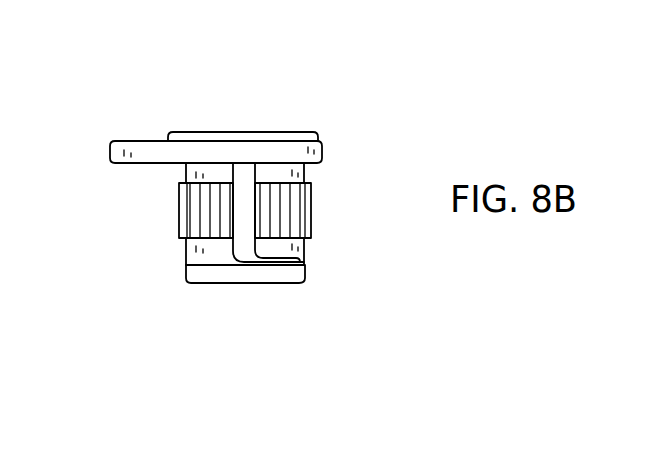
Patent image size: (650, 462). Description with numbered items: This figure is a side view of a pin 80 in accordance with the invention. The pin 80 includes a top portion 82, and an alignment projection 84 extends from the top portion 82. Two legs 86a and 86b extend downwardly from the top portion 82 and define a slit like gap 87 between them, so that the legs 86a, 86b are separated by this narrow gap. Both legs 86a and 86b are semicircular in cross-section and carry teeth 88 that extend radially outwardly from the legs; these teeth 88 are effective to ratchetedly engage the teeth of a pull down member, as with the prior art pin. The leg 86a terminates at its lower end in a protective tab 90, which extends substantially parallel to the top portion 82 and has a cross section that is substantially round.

The pin 80 is at (197, 114).
The top portion 82 is at (251, 99).
The alignment projection 84 is at (135, 140).
The leg 86a is at (183, 173).
The leg 86b is at (305, 173).
The slit like gap 87 is at (228, 160).
The teeth 88 is at (178, 217).
The protective tab 90 is at (222, 285).